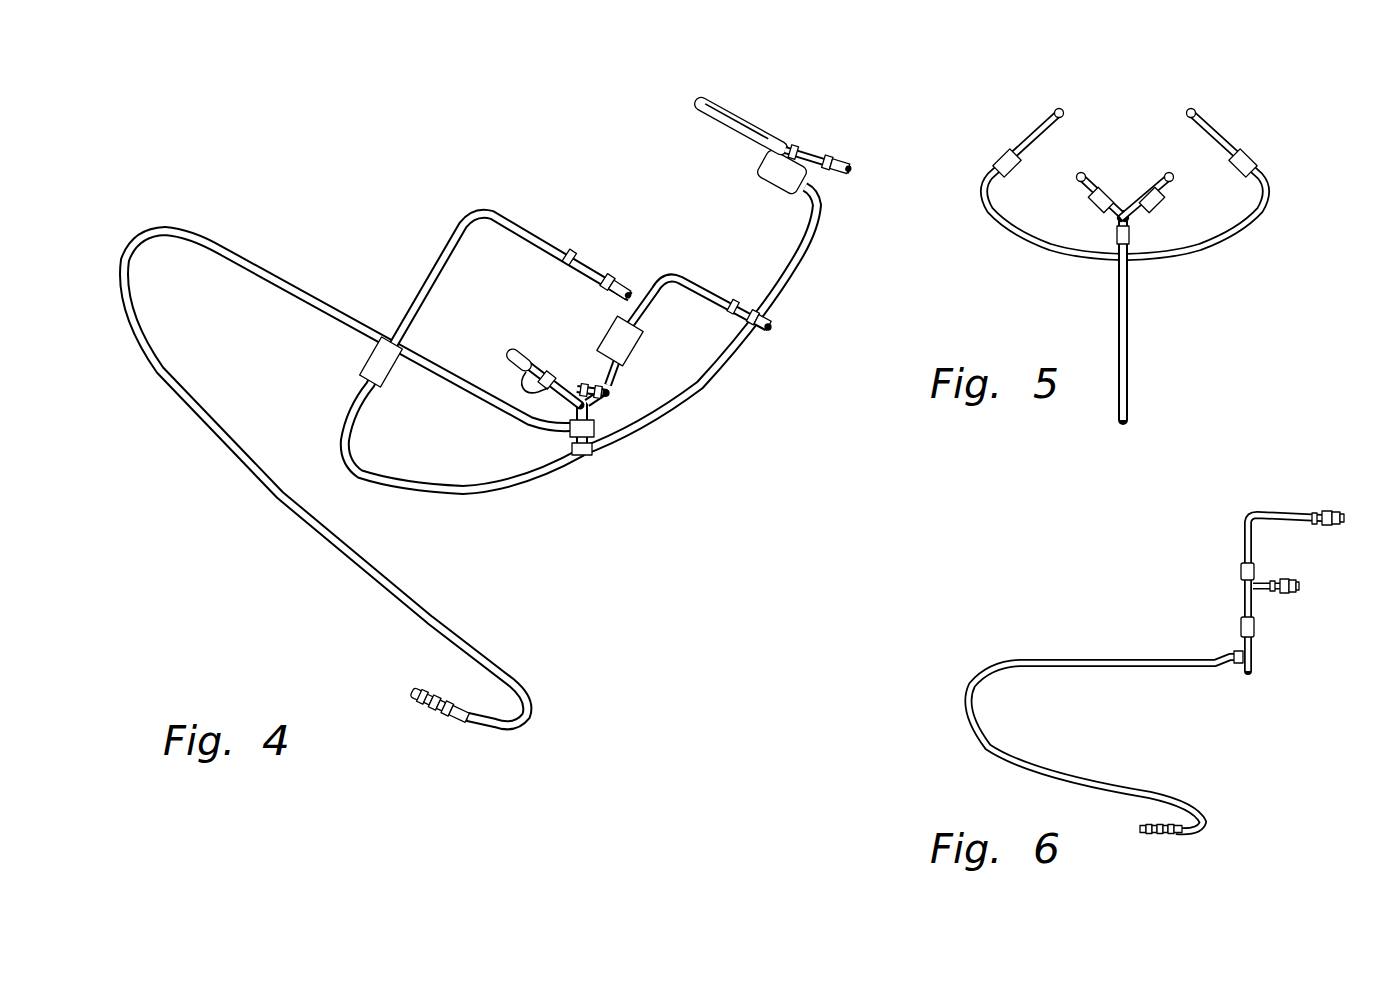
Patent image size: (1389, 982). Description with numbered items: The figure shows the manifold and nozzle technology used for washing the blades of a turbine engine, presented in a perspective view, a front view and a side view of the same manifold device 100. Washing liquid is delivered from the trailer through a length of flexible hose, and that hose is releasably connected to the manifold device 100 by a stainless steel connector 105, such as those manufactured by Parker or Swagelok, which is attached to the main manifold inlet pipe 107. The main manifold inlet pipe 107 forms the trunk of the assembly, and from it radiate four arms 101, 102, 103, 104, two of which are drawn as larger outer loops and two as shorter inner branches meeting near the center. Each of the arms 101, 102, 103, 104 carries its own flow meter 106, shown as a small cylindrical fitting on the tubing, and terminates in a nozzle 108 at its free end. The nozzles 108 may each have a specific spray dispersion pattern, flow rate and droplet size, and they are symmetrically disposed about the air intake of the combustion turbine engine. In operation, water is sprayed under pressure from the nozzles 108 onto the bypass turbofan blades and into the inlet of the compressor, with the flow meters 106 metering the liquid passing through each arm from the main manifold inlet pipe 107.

In FIG. 4, the manifold device 100 is at (658, 509).
In FIG. 5, the manifold device 100 is at (1285, 91).
In FIG. 6, the manifold device 100 is at (940, 601).
In FIG. 4, the first arm 101 is at (460, 497).
In FIG. 5, the first arm 101 is at (1040, 250).
In FIG. 4, the second arm 102 is at (510, 358).
In FIG. 5, the second arm 102 is at (1085, 185).
In FIG. 4, the third arm 103 is at (697, 277).
In FIG. 5, the third arm 103 is at (1170, 185).
In FIG. 4, the fourth arm 104 is at (800, 277).
In FIG. 5, the fourth arm 104 is at (1203, 250).
In FIG. 6, the fourth arm 104 is at (1245, 672).
In FIG. 4, the stainless steel connector 105 is at (430, 713).
In FIG. 6, the stainless steel connector 105 is at (1150, 835).
In FIG. 4, the flow meter 106 is at (368, 358).
In FIG. 5, the flow meter 106 is at (995, 158).
In FIG. 6, the flow meter 106 is at (1240, 571).
In FIG. 4, the main manifold inlet pipe 107 is at (272, 272).
In FIG. 5, the main manifold inlet pipe 107 is at (1130, 373).
In FIG. 6, the main manifold inlet pipe 107 is at (965, 685).
In FIG. 4, the nozzle 108 is at (633, 290).
In FIG. 5, the nozzle 108 is at (1060, 107).
In FIG. 6, the nozzle 108 is at (1332, 509).